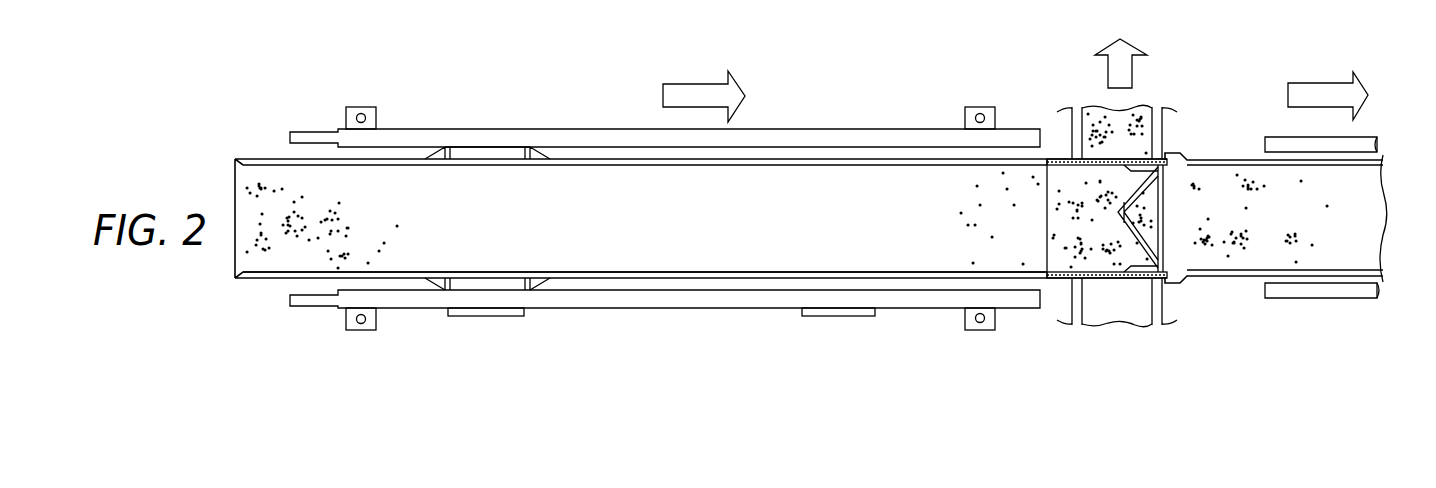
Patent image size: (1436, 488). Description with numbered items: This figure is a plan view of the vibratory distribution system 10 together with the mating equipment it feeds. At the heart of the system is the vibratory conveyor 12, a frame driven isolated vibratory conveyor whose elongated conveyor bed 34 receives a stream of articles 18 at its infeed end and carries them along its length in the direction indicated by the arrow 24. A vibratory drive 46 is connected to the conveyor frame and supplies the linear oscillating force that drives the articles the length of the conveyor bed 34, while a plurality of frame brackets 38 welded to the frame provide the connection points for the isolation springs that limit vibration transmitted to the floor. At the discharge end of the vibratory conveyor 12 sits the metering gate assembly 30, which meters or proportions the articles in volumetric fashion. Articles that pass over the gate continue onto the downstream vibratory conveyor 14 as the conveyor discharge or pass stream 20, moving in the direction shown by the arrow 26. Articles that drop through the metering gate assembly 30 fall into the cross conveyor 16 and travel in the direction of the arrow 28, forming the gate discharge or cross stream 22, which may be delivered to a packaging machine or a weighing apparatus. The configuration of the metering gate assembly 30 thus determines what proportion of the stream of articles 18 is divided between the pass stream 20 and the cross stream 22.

The vibratory distribution system 10 is at (841, 86).
The vibratory conveyor 12 is at (587, 309).
The downstream vibratory conveyor 14 is at (1218, 278).
The cross conveyor 16 is at (1117, 315).
The stream of articles 18 is at (260, 188).
The conveyor discharge or pass stream 20 is at (1188, 182).
The gate discharge or cross stream 22 is at (1135, 118).
The arrow 24 is at (690, 85).
The arrow 26 is at (1315, 85).
The arrow 28 is at (1128, 48).
The metering gate assembly 30 is at (1070, 267).
The conveyor bed 34 is at (683, 257).
The frame brackets 38 is at (973, 107).
The vibratory drive 46 is at (558, 7).